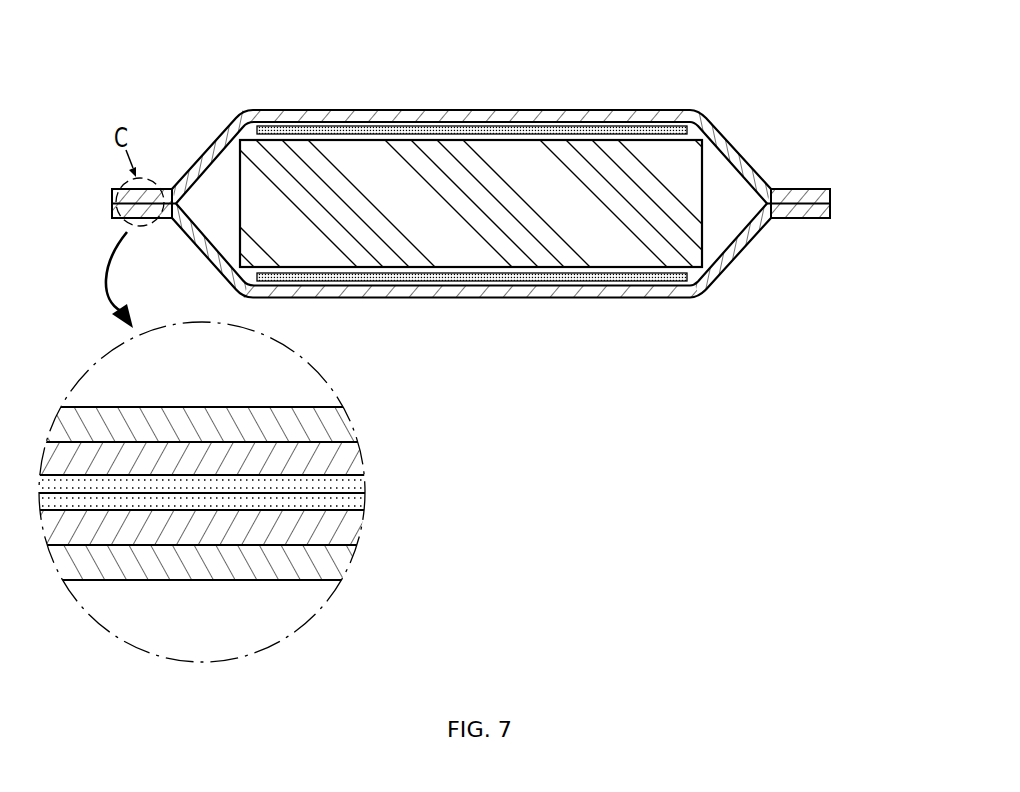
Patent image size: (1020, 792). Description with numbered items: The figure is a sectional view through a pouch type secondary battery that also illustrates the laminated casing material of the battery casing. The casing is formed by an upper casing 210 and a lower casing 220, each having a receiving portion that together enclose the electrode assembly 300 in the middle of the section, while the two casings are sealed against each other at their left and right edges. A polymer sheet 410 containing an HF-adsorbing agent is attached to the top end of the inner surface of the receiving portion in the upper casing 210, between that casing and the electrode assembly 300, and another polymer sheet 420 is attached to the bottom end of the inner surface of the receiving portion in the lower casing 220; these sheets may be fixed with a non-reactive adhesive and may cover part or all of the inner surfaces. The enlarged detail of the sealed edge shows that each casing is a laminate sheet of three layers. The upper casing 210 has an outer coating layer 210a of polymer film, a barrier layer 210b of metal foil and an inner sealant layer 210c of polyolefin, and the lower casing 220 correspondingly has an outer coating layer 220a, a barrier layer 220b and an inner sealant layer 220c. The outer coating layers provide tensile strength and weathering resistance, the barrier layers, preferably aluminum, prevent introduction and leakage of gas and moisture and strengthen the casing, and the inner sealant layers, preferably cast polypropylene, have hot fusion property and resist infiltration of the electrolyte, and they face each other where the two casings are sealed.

The upper casing 210 is at (666, 113).
The lower casing 220 is at (661, 292).
The electrode assembly 300 is at (489, 147).
The polymer sheet 410 is at (558, 128).
The polymer sheet 420 is at (557, 281).
The outer coating layer 210a is at (362, 428).
The barrier layer 210b is at (362, 457).
The inner sealant layer 210c is at (362, 484).
The outer coating layer 220a is at (362, 566).
The barrier layer 220b is at (362, 537).
The inner sealant layer 220c is at (362, 504).